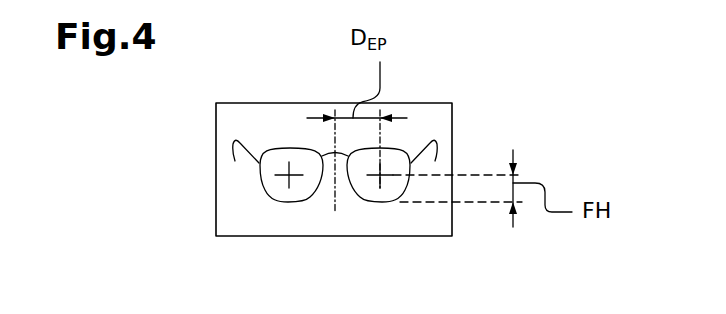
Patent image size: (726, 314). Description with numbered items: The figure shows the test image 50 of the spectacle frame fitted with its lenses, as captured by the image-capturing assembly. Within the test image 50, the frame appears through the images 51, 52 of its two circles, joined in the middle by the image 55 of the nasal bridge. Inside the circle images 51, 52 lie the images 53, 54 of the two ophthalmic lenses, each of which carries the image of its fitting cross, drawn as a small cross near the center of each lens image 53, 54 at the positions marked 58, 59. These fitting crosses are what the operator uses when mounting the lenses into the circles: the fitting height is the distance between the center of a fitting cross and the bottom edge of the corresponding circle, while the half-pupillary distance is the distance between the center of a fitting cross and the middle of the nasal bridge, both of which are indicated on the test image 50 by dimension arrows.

The test image 50 is at (208, 177).
The image of the first circle 51 is at (275, 148).
The image of the second circle 52 is at (405, 149).
The image of the first ophthalmic lens 53 is at (259, 173).
The image of the second ophthalmic lens 54 is at (397, 183).
The image of the nasal bridge 55 is at (325, 151).
The left pupil center marker 58 is at (288, 180).
The right pupil center marker 59 is at (378, 180).